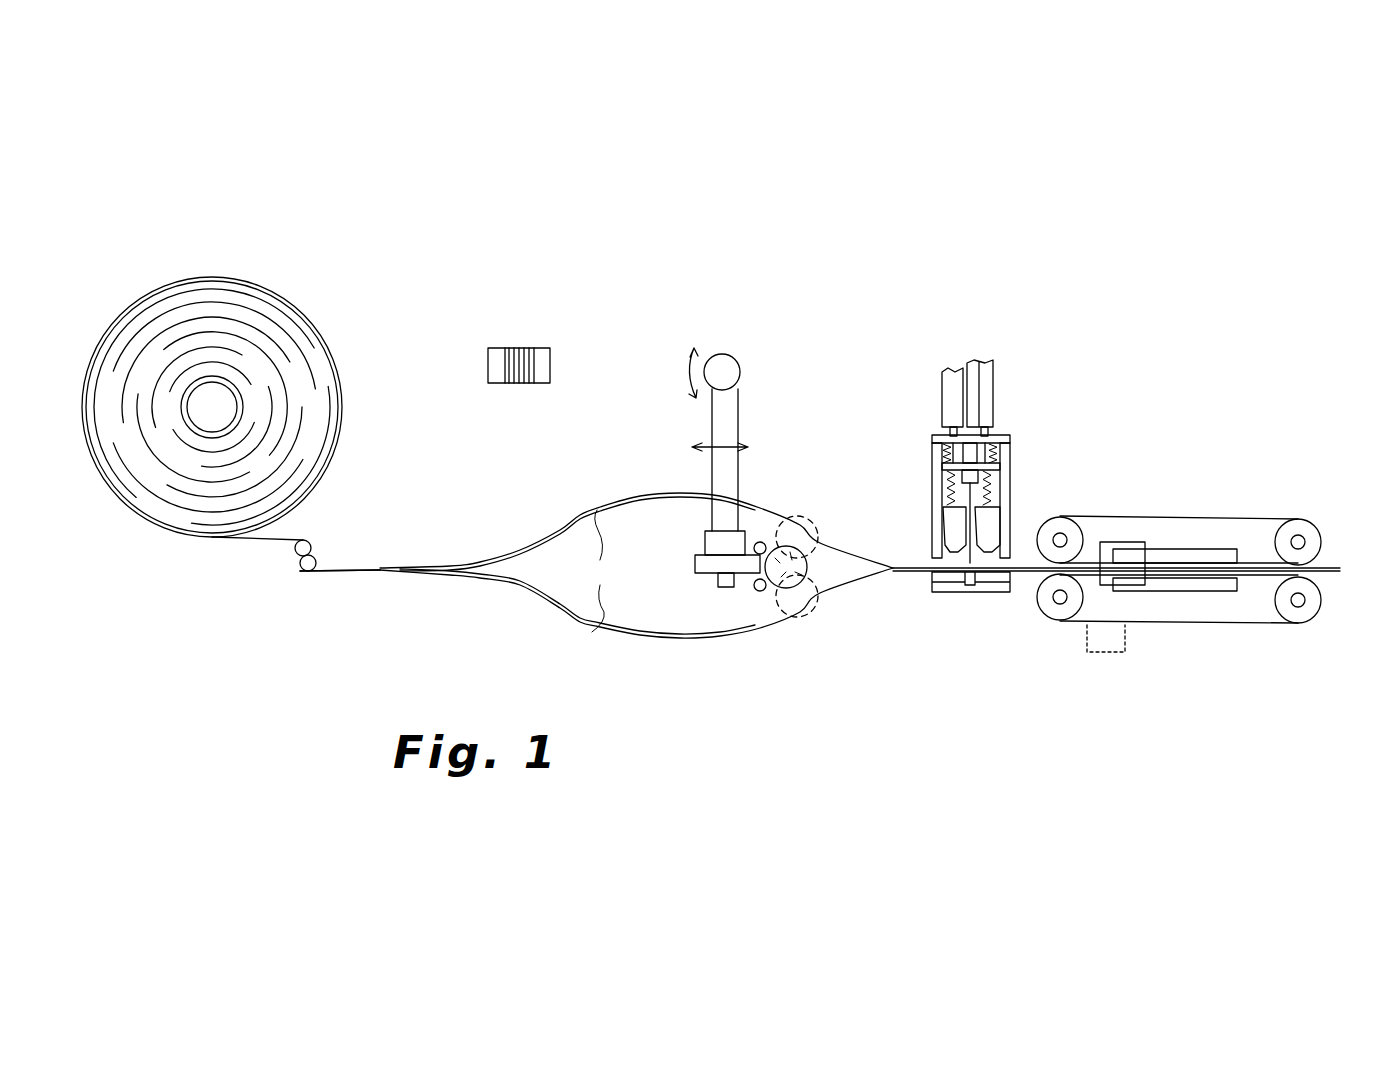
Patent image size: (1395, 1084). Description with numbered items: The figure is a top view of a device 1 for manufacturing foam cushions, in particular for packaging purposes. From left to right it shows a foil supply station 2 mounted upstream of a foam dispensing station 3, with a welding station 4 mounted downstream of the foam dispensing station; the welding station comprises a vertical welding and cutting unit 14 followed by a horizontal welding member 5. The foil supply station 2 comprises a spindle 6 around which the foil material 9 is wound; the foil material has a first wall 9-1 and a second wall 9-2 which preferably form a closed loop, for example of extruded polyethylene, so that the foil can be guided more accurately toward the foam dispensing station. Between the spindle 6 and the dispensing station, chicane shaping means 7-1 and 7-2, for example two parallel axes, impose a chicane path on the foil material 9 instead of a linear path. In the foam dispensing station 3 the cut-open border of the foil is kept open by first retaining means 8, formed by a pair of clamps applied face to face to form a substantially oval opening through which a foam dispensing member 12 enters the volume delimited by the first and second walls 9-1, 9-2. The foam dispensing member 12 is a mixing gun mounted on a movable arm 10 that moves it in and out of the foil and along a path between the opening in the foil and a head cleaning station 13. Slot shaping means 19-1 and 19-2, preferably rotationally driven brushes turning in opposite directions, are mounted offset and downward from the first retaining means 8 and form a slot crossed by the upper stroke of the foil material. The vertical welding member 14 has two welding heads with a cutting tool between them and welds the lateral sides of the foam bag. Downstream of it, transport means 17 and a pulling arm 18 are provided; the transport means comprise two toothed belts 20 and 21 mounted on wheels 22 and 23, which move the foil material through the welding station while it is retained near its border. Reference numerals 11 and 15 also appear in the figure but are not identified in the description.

The device 1 is at (1094, 410).
The foil supply station 2 is at (135, 553).
The foam dispensing station 3 is at (657, 395).
The welding station 4 is at (923, 707).
The horizontal welding member 5 is at (1128, 645).
The spindle 6 is at (221, 420).
The chicane shaping means 7-1 is at (296, 550).
The chicane shaping means 7-2 is at (318, 560).
The first retaining means 8 is at (606, 571).
The foil material 9 is at (366, 577).
The first wall 9-1 is at (424, 572).
The second wall 9-2 is at (424, 572).
The arm 10 is at (746, 405).
The loop region 11 is at (586, 586).
The foam dispensing member 12 is at (762, 556).
The head cleaning station 13 is at (554, 353).
The vertical welding member 14 is at (966, 604).
The pin / feed roller 15 is at (978, 556).
The transport means 17 is at (1272, 505).
The pulling arm 18 is at (1118, 542).
The slot shaping means 19-1 is at (809, 620).
The slot shaping means 19-2 is at (805, 517).
The toothed belt 20 is at (1163, 517).
The toothed belt 21 is at (1113, 623).
The wheels 22 is at (1322, 600).
The wheels 23 is at (1045, 602).